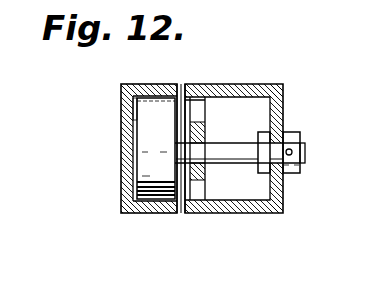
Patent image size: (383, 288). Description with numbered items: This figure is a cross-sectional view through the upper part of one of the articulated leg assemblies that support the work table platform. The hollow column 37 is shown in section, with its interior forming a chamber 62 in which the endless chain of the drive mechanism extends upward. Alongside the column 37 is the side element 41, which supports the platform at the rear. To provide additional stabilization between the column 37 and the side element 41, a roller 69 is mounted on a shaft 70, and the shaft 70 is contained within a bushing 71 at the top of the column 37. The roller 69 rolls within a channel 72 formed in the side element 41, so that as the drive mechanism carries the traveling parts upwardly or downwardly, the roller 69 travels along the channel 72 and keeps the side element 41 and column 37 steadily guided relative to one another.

The hollow column 37 is at (262, 213).
The side element 41 is at (125, 208).
The chamber 62 is at (232, 200).
The roller 69 is at (153, 152).
The shaft 70 is at (228, 150).
The bushing 71 is at (295, 132).
The channel 72 is at (133, 115).